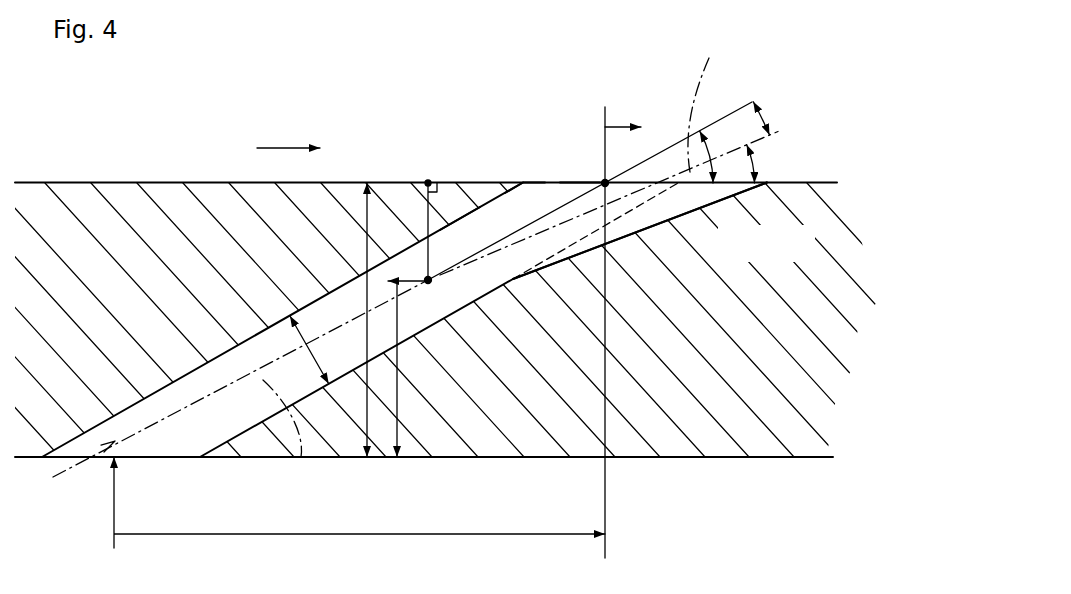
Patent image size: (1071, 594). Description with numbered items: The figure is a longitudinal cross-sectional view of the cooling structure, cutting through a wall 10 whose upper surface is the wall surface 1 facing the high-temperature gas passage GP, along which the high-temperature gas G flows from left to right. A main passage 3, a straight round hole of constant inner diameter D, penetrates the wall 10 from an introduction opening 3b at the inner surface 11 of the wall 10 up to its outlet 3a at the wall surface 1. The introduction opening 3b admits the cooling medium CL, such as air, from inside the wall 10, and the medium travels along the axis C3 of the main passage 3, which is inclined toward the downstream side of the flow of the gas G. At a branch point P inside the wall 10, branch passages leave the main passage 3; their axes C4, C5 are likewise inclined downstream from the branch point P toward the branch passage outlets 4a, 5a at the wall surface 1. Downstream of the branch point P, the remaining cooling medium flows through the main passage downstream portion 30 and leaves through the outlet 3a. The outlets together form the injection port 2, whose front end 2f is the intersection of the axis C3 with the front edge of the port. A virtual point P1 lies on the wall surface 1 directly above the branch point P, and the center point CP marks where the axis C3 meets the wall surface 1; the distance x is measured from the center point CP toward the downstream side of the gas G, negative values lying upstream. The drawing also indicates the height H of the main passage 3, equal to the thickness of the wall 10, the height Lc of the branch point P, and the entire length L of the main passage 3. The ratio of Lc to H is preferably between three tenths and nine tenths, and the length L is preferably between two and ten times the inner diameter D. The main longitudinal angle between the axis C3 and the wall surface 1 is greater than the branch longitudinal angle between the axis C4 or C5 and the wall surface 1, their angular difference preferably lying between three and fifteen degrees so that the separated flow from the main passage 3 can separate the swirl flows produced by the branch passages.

The wall surface 1 is at (528, 313).
The injection port 2 is at (404, 284).
The front end of the injection port 2f is at (523, 182).
The main passage 3 is at (200, 423).
The outlet of the main passage 3a is at (578, 181).
The introduction opening 3b is at (150, 458).
The branch passage outlet 4a is at (657, 227).
The branch passage outlet 5a is at (742, 182).
The wall 10 is at (535, 437).
The inner surface of the wall 11 is at (236, 458).
The main passage downstream portion 30 is at (470, 223).
The axis of the main passage C3 is at (301, 457).
The axis of the branch passage C4 is at (609, 154).
The axis of the branch passage C5 is at (609, 154).
The cooling medium CL is at (68, 470).
The center point CP is at (631, 319).
The branch point P is at (427, 278).
The virtual point P1 is at (428, 181).
The distance from the center point x is at (631, 125).
The high-temperature gas G is at (290, 148).
The high-temperature gas passage GP is at (141, 136).
The inner diameter D is at (298, 330).
The height of the main passage H is at (367, 395).
The entire length of the main passage L is at (333, 534).
The height of the branch point Lc is at (397, 394).